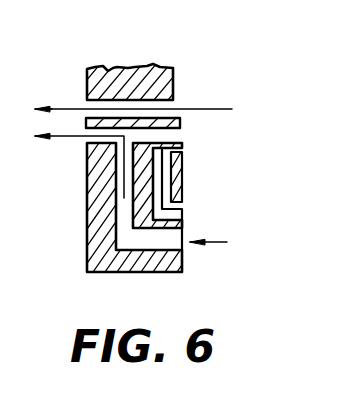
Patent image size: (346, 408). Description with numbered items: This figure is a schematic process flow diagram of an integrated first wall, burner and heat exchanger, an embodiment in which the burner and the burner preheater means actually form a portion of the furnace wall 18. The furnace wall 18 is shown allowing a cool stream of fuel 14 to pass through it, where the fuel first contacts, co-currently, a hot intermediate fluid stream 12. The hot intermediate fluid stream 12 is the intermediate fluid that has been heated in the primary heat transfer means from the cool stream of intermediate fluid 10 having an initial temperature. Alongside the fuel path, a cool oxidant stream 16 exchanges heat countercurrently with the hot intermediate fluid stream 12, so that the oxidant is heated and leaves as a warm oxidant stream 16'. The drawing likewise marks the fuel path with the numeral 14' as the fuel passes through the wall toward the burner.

The furnace wall 18 is at (153, 65).
The cool fuel 14 is at (151, 103).
The first reference arrow 14' is at (51, 94).
The warm oxidant stream 16' is at (72, 165).
The cool stream of intermediate fluid 10 is at (182, 208).
The hot intermediate fluid stream 12 is at (182, 147).
The cool oxidant 16 is at (223, 255).